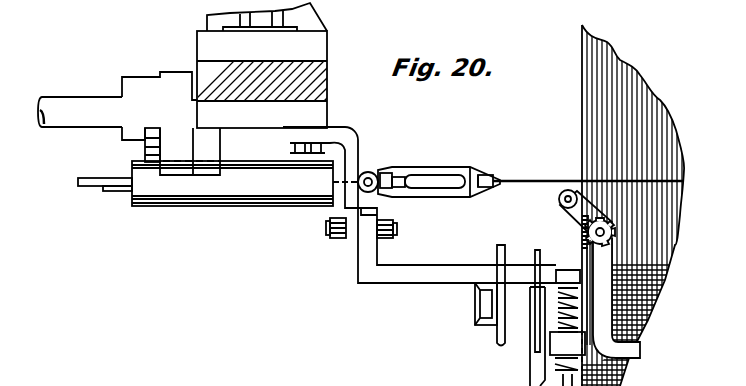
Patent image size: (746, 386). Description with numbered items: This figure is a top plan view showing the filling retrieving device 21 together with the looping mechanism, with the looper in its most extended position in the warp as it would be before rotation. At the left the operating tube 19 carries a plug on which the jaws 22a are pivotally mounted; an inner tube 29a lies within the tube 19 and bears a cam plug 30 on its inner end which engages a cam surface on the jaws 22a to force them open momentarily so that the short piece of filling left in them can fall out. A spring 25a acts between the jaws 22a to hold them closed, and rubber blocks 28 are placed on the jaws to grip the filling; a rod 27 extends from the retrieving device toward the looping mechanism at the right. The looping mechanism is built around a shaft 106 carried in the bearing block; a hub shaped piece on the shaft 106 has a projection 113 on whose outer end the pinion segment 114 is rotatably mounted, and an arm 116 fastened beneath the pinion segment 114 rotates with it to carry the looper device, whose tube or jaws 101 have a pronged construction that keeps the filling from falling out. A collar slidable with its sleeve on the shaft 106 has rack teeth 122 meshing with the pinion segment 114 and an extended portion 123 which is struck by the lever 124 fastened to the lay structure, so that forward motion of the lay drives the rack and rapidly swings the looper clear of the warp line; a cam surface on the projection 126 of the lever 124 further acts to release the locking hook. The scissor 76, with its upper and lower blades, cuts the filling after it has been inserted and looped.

The operating tube 19 is at (108, 176).
The inner tube 29a is at (88, 183).
The retrieving device 21 is at (467, 165).
The jaws 22a is at (480, 170).
The rubber blocks 28 is at (493, 175).
The rod 27 is at (513, 178).
The cam plug 30 is at (390, 195).
The spring 25a is at (421, 194).
The tube or jaws 101 is at (585, 151).
The arm 116 is at (600, 176).
The pinion segment 114 is at (612, 222).
The rack teeth 122 is at (580, 245).
The projection 113 is at (606, 262).
The extended portion 123 is at (566, 286).
The lever 124 is at (519, 265).
The scissor 76 is at (486, 295).
The projection 126 is at (533, 344).
The shaft 106 is at (622, 367).